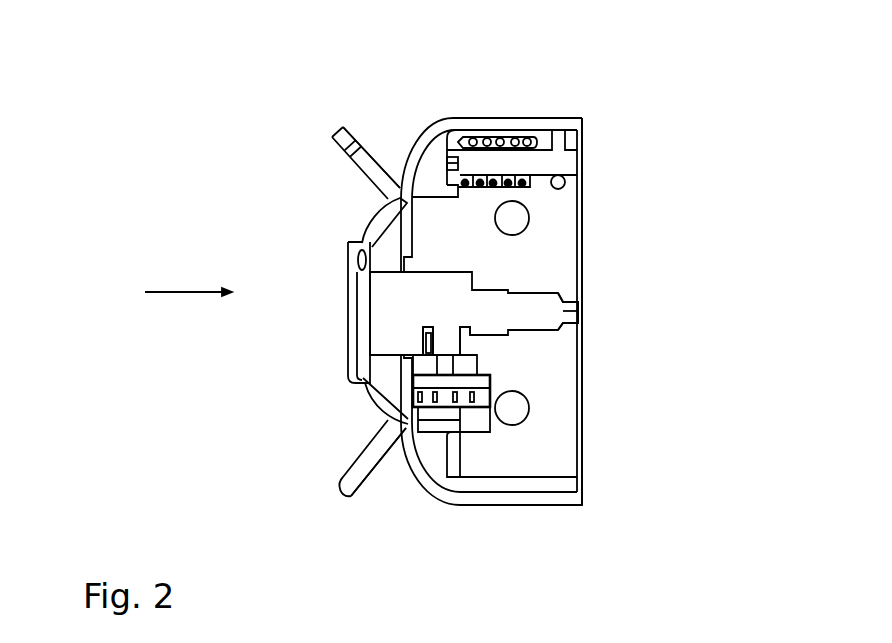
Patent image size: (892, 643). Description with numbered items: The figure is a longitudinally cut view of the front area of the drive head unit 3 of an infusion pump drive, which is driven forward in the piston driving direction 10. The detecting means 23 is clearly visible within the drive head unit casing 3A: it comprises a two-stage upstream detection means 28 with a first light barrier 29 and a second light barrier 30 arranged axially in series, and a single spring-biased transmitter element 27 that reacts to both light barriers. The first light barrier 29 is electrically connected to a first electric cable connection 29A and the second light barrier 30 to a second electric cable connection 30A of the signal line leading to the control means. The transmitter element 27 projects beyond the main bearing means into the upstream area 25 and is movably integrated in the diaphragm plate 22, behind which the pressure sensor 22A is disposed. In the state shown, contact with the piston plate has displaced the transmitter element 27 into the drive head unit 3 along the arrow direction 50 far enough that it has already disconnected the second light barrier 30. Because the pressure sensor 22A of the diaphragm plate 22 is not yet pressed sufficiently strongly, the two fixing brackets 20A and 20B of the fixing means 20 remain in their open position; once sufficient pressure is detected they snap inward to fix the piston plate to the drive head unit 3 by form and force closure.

The drive head unit 3 is at (618, 72).
The drive head unit casing 3A is at (572, 118).
The piston driving direction 10 is at (682, 297).
The fixing means 20 is at (260, 450).
The fixing bracket 20A is at (372, 167).
The fixing bracket 20B is at (345, 478).
The diaphragm plate 22 is at (385, 248).
The pressure sensor 22A is at (458, 96).
The detecting means 23 is at (648, 225).
The upstream area 25 is at (197, 261).
The transmitter element 27 is at (375, 312).
The two-stage upstream detection means 28 is at (522, 369).
The first light barrier 29 is at (427, 365).
The first electric cable connection 29A is at (578, 321).
The second light barrier 30 is at (468, 365).
The second electric cable connection 30A is at (578, 300).
The arrow direction 50 is at (185, 292).